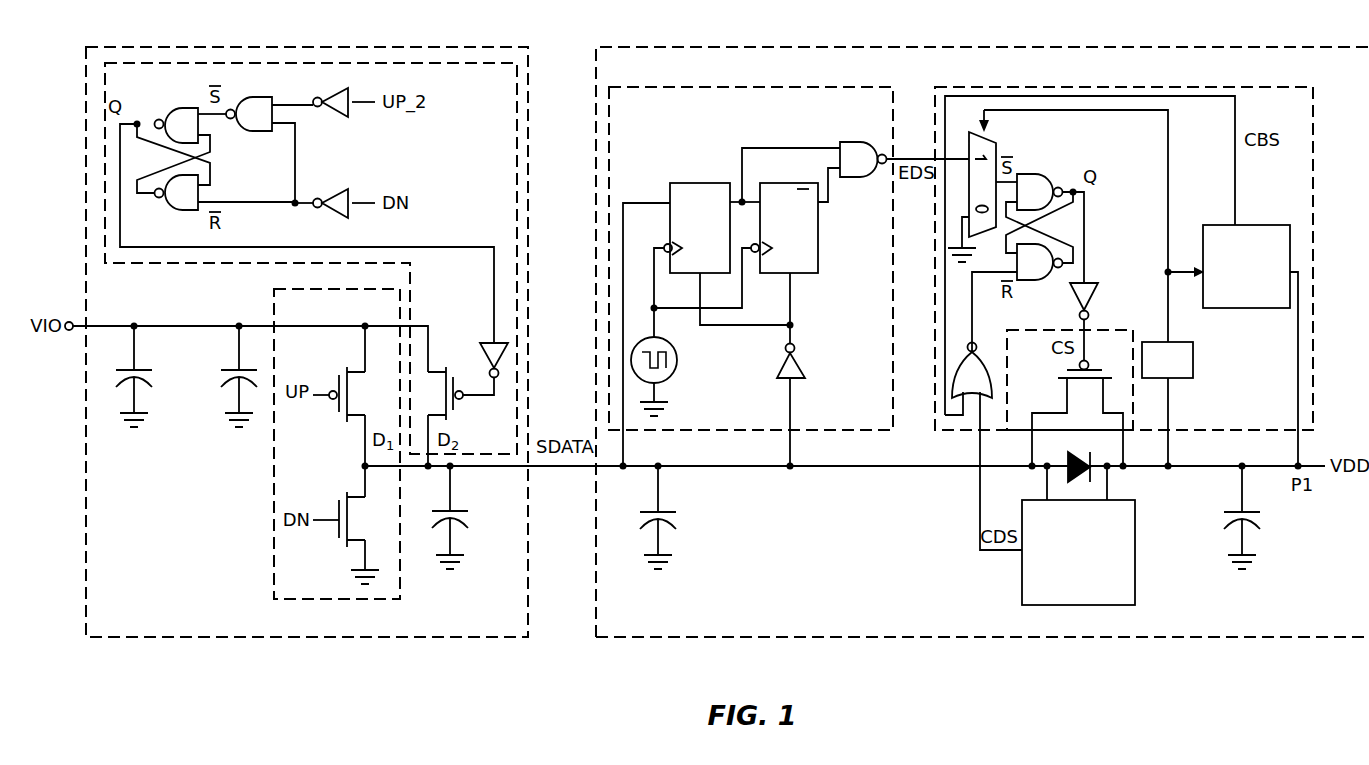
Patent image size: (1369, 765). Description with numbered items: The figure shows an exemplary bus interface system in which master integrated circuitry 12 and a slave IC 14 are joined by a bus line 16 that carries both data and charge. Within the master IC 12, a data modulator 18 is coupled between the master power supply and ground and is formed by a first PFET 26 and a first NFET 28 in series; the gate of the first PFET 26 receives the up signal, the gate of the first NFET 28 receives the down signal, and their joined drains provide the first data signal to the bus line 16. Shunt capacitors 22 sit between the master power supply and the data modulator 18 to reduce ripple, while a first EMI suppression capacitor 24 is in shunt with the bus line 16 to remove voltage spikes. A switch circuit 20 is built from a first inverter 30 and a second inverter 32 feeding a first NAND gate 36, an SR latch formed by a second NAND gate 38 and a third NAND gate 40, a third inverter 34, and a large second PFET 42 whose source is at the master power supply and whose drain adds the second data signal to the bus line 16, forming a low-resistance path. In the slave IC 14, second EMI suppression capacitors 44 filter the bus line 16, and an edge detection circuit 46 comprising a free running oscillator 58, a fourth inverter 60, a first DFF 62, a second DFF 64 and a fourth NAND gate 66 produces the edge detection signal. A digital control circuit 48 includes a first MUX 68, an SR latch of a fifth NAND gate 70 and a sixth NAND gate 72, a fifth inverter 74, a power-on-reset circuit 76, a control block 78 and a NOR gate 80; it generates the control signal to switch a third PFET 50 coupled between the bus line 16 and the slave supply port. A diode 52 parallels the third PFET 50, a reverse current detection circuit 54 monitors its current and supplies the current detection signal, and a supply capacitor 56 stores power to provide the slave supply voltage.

The master integrated circuitry 12 is at (103, 619).
The slave IC 14 is at (613, 619).
The bus line 16 is at (561, 470).
The data modulator 18 is at (288, 586).
The switch circuit 20 is at (475, 97).
The shunt capacitors 22 is at (154, 384).
The first EMI suppression capacitor 24 is at (464, 517).
The first PFET 26 is at (355, 394).
The first NFET 28 is at (360, 538).
The first inverter 30 is at (329, 111).
The second inverter 32 is at (329, 211).
The third inverter 34 is at (487, 347).
The first NAND gate 36 is at (244, 124).
The second NAND gate 38 is at (172, 134).
The third NAND gate 40 is at (172, 202).
The second PFET 42 is at (445, 383).
The second EMI suppression capacitors 44 is at (651, 517).
The edge detection circuit 46 is at (620, 119).
The digital control circuit 48 is at (1282, 119).
The third PFET 50 is at (1077, 414).
The diode 52 is at (1078, 454).
The reverse current detection circuit 54 is at (1069, 594).
The supply capacitor 56 is at (1248, 517).
The free running oscillator 58 is at (672, 376).
The fourth inverter 60 is at (804, 361).
The first D type flip-flop 62 is at (692, 237).
The second DFF 64 is at (782, 237).
The fourth NAND gate 66 is at (847, 168).
The first multiplexer 68 is at (983, 195).
The fifth NAND gate 70 is at (1023, 201).
The sixth NAND gate 72 is at (1023, 272).
The fifth inverter 74 is at (1096, 301).
The power-on-reset circuit 76 is at (1181, 360).
The control block 78 is at (1237, 299).
The NOR gate 80 is at (963, 381).